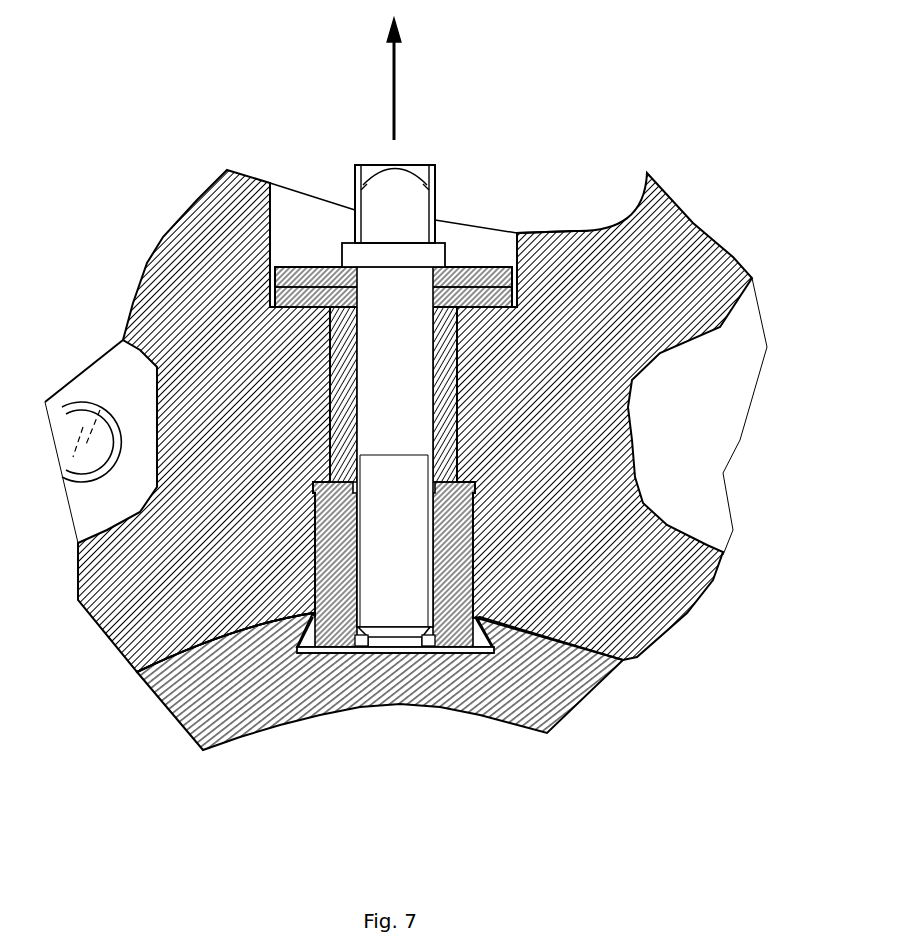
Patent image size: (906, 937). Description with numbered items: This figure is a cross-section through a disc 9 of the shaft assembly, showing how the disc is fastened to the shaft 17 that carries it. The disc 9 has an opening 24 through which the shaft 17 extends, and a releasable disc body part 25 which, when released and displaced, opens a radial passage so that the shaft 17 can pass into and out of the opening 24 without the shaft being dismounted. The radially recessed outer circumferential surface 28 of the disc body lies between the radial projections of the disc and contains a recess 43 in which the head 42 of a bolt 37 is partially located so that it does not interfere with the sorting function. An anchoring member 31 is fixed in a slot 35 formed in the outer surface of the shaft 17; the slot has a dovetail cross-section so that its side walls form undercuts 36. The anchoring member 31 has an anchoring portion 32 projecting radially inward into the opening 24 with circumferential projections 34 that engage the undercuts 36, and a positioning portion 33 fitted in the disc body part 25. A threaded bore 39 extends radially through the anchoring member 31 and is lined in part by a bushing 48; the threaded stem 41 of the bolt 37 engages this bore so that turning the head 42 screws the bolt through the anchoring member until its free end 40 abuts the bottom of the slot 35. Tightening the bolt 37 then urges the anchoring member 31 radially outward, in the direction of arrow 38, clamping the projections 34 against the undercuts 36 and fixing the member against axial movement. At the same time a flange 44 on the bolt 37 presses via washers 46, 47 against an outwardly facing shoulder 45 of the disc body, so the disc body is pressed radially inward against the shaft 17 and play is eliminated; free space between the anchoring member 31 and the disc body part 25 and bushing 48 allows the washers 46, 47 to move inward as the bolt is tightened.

The disc 9 is at (574, 224).
The shaft 17 is at (505, 722).
The opening 24 is at (200, 643).
The releasable part 25 is at (243, 175).
The radially recessed portion 28 is at (535, 232).
The anchoring member 31 is at (349, 659).
The anchoring portion 32 is at (466, 632).
The positioning portion 33 is at (455, 582).
The projections 34 is at (303, 638).
The slot 35 is at (463, 652).
The undercuts 36 is at (308, 630).
The bolt 37 is at (419, 158).
The arrow 38 is at (397, 63).
The threaded bore 39 is at (432, 520).
The free end 40 is at (398, 656).
The threaded stem 41 is at (356, 559).
The head 42 is at (435, 198).
The recess 43 is at (316, 230).
The flange 44 is at (432, 257).
The shoulder 45 is at (298, 303).
The washer 46 is at (490, 278).
The washer 47 is at (490, 298).
The bushing 48 is at (450, 405).